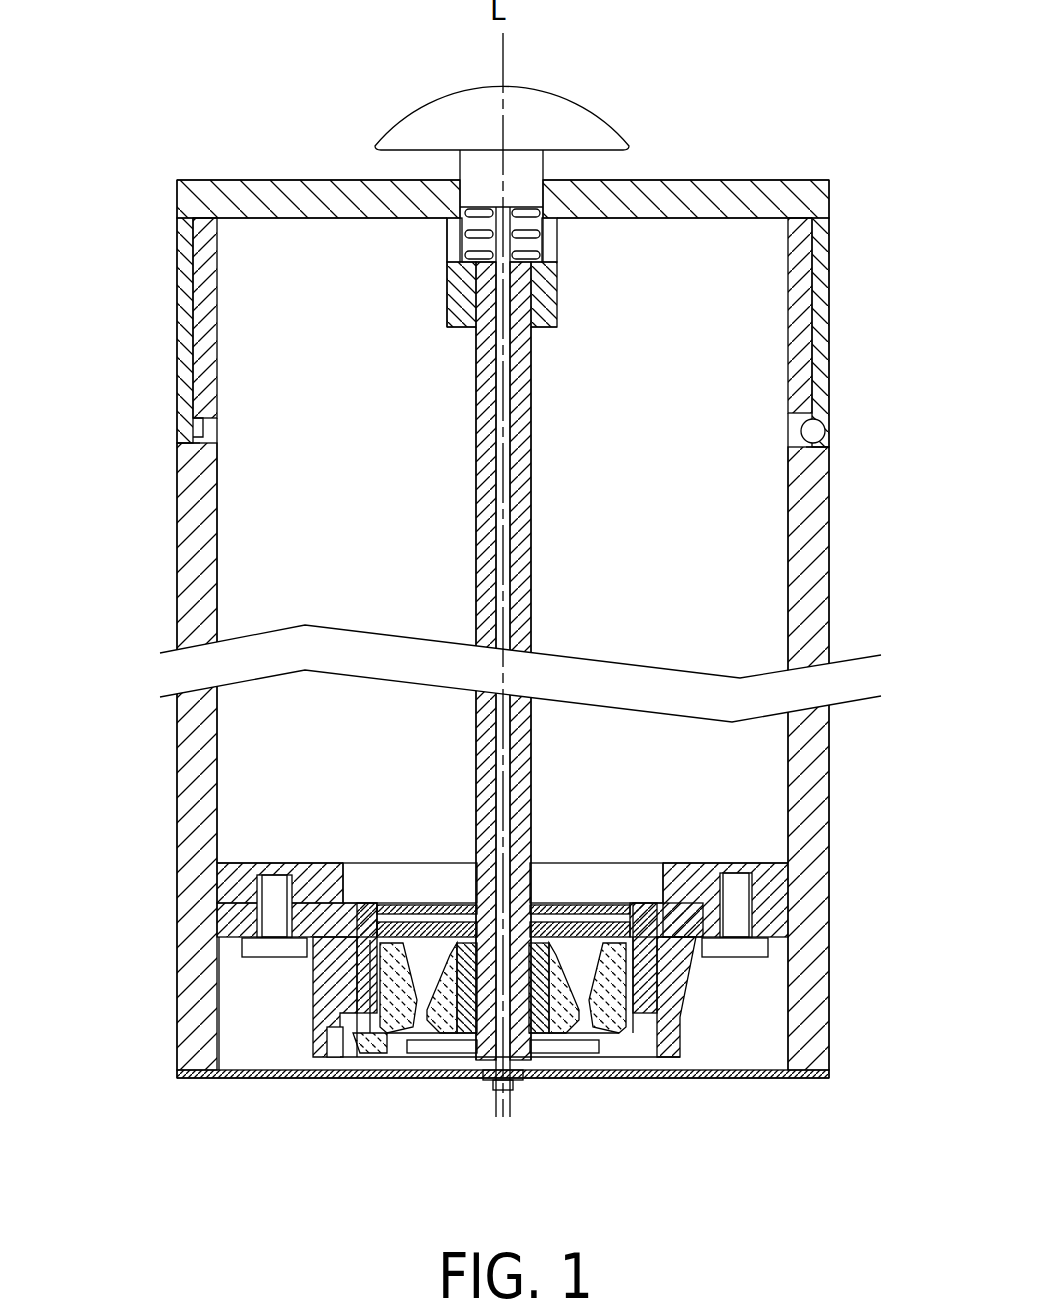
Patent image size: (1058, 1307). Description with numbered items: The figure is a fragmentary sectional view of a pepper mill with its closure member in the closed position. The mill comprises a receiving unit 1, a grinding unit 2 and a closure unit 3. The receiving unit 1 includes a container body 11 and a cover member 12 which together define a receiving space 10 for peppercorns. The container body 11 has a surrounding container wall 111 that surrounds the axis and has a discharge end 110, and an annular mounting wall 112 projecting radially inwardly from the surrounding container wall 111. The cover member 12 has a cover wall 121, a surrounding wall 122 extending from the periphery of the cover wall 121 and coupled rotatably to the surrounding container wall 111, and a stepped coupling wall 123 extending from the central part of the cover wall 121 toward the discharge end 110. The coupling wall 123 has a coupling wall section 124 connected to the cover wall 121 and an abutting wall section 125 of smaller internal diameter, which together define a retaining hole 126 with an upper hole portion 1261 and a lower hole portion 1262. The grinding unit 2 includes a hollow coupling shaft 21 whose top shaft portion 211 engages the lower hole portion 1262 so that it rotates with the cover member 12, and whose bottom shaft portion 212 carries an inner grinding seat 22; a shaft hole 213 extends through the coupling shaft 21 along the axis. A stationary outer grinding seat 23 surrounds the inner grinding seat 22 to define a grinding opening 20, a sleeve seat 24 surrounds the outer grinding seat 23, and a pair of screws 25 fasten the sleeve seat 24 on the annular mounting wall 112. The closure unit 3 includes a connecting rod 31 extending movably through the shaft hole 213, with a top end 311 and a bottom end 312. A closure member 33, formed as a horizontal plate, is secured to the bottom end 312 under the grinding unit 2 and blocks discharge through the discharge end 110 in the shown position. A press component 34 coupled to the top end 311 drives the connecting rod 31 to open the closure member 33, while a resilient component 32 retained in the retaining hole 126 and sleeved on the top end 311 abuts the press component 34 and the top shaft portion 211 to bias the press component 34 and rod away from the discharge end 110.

The receiving unit 1 is at (158, 308).
The grinding unit 2 is at (717, 993).
The closure unit 3 is at (667, 1088).
The receiving space 10 is at (267, 475).
The container body 11 is at (177, 505).
The cover member 12 is at (167, 243).
The grinding opening 20 is at (387, 1017).
The coupling shaft 21 is at (530, 480).
The inner grinding seat 22 is at (440, 1033).
The outer grinding seat 23 is at (360, 1040).
The sleeve seat 24 is at (327, 990).
The screws 25 is at (272, 913).
The connecting rod 31 is at (530, 445).
The resilient component 32 is at (522, 210).
The closure member 33 is at (750, 1077).
The press component 34 is at (527, 108).
The discharge end 110 is at (217, 1080).
The surrounding container wall 111 is at (200, 582).
The annular mounting wall 112 is at (247, 885).
The cover wall 121 is at (590, 192).
The surrounding wall 122 is at (818, 267).
The coupling wall 123 is at (843, 132).
The coupling wall section 124 is at (557, 248).
The abutting wall section 125 is at (550, 293).
The retaining hole 126 is at (455, 262).
The top shaft portion 211 is at (447, 263).
The bottom shaft portion 212 is at (570, 1035).
The shaft hole 213 is at (530, 550).
The top end 311 is at (497, 203).
The bottom end 312 is at (508, 1088).
The upper hole portion 1261 is at (458, 237).
The lower hole portion 1262 is at (470, 330).